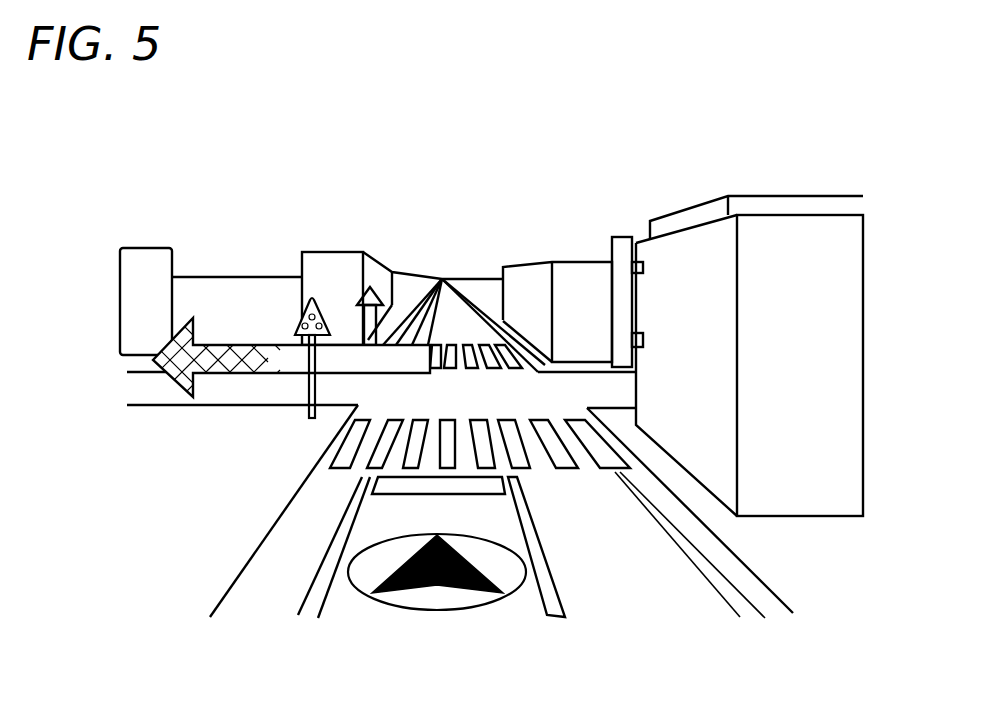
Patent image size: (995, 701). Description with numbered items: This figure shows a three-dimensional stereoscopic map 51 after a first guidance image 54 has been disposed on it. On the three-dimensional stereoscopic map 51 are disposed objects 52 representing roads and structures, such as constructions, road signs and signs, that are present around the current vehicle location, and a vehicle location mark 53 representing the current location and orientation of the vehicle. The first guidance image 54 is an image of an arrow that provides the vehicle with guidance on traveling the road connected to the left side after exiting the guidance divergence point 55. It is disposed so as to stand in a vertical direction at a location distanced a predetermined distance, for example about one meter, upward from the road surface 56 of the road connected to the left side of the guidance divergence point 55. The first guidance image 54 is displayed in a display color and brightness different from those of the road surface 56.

The three-dimensional stereoscopic map 51 is at (571, 137).
The object 52 is at (810, 505).
The vehicle location mark 53 is at (513, 578).
The first guidance image 54 is at (285, 383).
The guidance divergence point 55 is at (477, 397).
The road surface 56 is at (288, 379).